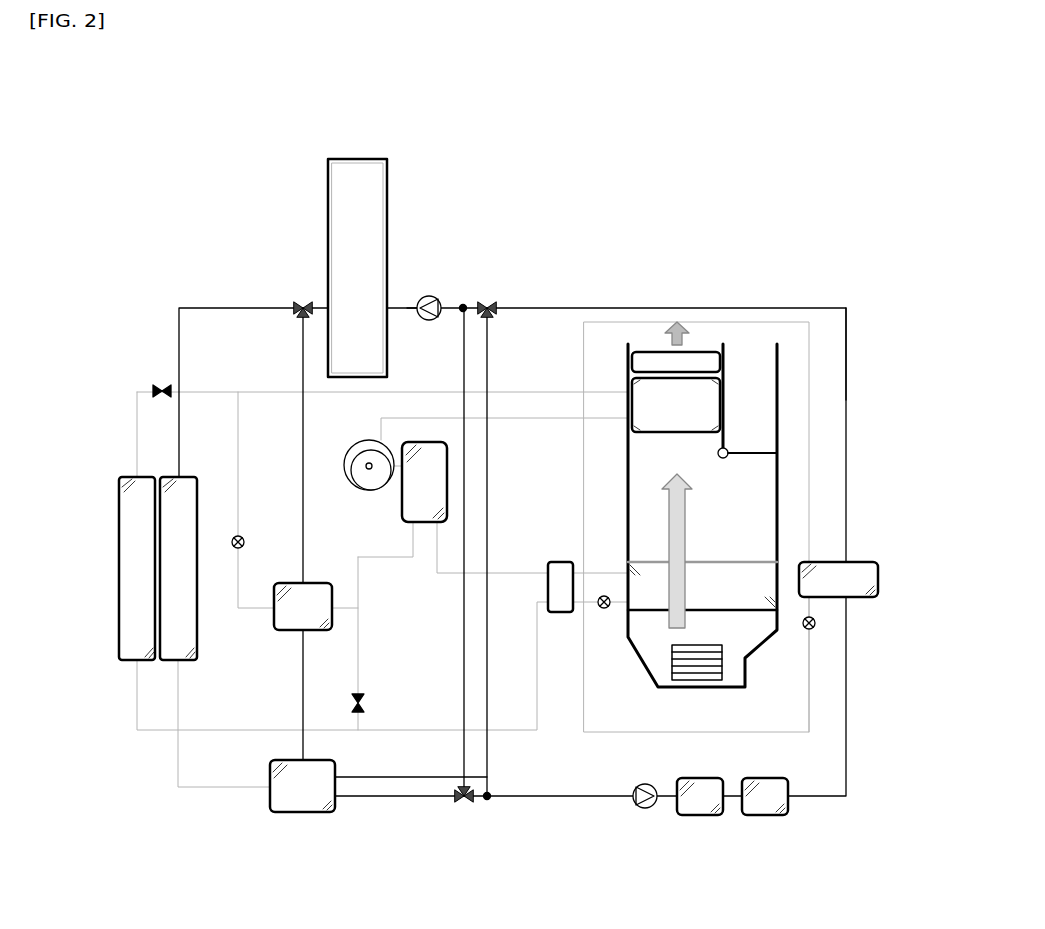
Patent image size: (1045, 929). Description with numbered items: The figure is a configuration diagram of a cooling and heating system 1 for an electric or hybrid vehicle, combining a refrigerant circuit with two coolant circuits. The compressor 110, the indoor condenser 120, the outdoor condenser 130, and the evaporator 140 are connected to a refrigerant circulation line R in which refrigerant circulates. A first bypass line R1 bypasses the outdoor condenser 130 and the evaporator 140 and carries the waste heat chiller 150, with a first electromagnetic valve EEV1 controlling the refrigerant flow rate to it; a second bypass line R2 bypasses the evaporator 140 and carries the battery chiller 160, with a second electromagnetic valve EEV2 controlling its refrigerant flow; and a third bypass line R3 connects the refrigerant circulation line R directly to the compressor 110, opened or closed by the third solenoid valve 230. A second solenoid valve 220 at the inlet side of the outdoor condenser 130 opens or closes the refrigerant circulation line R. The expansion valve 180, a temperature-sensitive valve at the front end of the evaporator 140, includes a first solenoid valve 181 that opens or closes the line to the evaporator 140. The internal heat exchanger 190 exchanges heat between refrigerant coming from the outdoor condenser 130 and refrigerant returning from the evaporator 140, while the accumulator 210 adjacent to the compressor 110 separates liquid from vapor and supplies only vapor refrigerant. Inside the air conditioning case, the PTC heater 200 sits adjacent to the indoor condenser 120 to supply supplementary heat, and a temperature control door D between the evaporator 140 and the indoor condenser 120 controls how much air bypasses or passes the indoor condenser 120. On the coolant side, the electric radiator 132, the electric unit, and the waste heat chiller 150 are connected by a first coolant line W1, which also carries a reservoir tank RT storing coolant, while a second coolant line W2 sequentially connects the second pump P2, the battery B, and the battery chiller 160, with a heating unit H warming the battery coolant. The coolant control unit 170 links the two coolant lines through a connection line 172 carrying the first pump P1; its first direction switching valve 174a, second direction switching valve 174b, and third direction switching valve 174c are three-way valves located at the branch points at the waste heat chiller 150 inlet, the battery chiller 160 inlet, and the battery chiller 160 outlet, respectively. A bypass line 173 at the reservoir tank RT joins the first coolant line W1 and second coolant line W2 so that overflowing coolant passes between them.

The cooling and heating system 1 is at (681, 210).
The compressor 110 is at (347, 467).
The indoor condenser 120 is at (707, 398).
The outdoor condenser 130 is at (118, 542).
The electric radiator 132 is at (158, 603).
The evaporator 140 is at (780, 570).
The waste heat chiller 150 is at (292, 632).
The battery chiller 160 is at (880, 577).
The coolant control unit 170 is at (503, 107).
The connection line 172 is at (408, 308).
The bypass line 173 is at (445, 777).
The first direction switching valve 174a is at (303, 299).
The second direction switching valve 174b is at (466, 804).
The third direction switching valve 174c is at (487, 299).
The expansion valve 180 is at (622, 658).
The first solenoid valve 181 is at (604, 608).
The internal heat exchanger 190 is at (560, 612).
The PTC heater 200 is at (645, 357).
The accumulator 210 is at (448, 480).
The second solenoid valve 220 is at (162, 386).
The third solenoid valve 230 is at (365, 707).
The first coolant line W1 is at (220, 308).
The second coolant line W2 is at (810, 308).
The refrigerant circulation line R is at (137, 415).
The first bypass line R1 is at (238, 447).
The second bypass line R2 is at (810, 700).
The third bypass line R3 is at (360, 673).
The reservoir tank RT is at (308, 812).
The first pump P1 is at (436, 319).
The second pump P2 is at (642, 808).
The heating unit H is at (702, 815).
The battery B is at (767, 815).
The temperature control door D is at (747, 452).
The first electromagnetic valve EEV1 is at (247, 543).
The second electromagnetic valve EEV2 is at (816, 622).